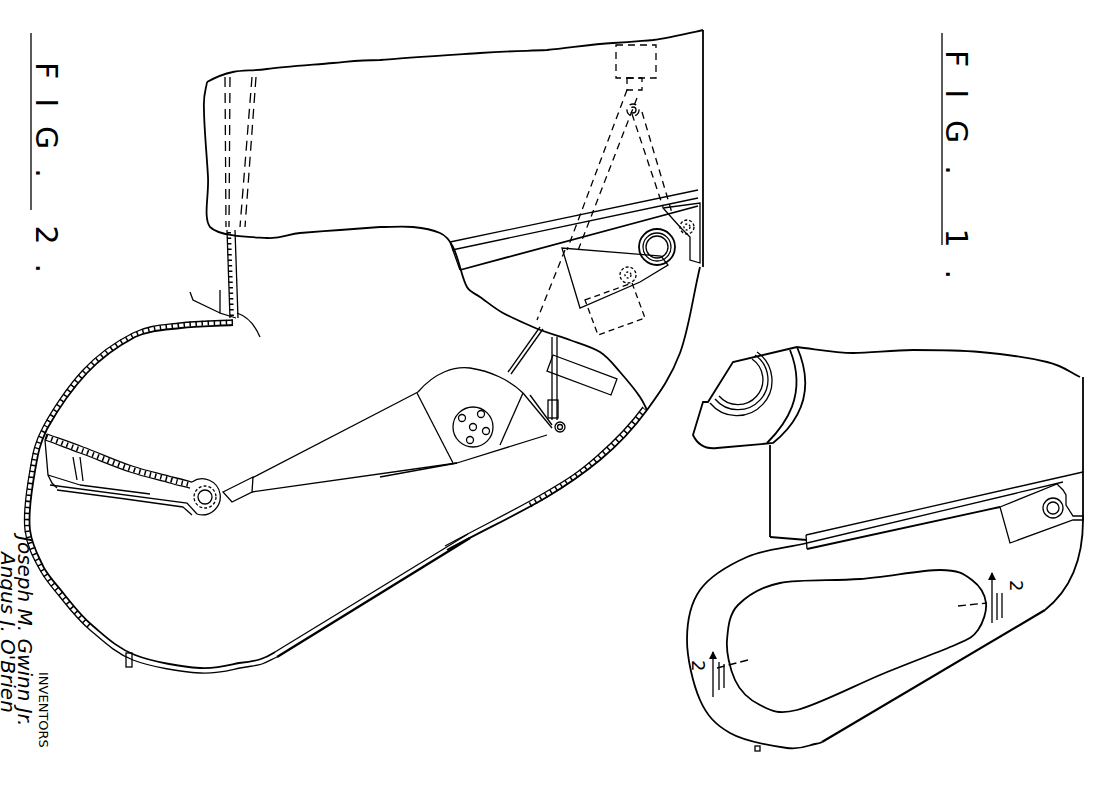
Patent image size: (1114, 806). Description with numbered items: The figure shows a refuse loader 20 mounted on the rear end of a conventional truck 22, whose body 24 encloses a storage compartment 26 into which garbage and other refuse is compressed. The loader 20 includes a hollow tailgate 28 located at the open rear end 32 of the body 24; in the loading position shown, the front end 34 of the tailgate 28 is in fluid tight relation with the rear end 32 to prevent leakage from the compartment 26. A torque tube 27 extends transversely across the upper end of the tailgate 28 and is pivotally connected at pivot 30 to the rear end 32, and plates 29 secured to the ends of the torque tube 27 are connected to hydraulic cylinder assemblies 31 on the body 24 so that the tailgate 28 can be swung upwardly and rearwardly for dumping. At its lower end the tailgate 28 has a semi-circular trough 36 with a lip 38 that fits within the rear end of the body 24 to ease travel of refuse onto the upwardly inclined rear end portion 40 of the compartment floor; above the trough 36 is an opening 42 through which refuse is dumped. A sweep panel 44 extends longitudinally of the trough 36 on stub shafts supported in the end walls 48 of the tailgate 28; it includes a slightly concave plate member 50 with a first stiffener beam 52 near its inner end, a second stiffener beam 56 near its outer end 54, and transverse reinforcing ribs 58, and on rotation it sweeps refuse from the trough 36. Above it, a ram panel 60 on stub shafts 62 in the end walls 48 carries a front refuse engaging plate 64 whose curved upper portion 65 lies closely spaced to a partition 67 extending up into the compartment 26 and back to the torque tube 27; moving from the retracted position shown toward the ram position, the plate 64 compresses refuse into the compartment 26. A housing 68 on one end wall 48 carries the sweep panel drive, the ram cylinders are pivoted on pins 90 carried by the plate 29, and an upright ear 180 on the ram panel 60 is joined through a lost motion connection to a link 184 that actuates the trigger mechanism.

In FIG. 1, the refuse loader 20 is at (691, 633).
In FIG. 1, the truck 22 is at (762, 512).
In FIG. 1, the body 24 is at (1036, 370).
In FIG. 2, the storage compartment 26 is at (303, 232).
In FIG. 2, the torque tube 27 is at (670, 265).
In FIG. 2, the tailgate structure 28 is at (135, 332).
In FIG. 1, the tailgate structure 28 is at (1049, 588).
In FIG. 2, the plates 29 is at (660, 264).
In FIG. 2, the pivot 30 is at (695, 228).
In FIG. 2, the hydraulic cylinder assemblies 31 is at (618, 70).
In FIG. 2, the rear end of body 32 is at (558, 226).
In FIG. 1, the rear end of body 32 is at (957, 503).
In FIG. 2, the front end of tailgate 34 is at (523, 243).
In FIG. 1, the front end of tailgate 34 is at (908, 520).
In FIG. 2, the trough portion 36 is at (88, 632).
In FIG. 2, the lip 38 is at (237, 322).
In FIG. 2, the rear end portion of floor 40 is at (247, 130).
In FIG. 2, the opening 42 is at (345, 613).
In FIG. 2, the sweep panel 44 is at (126, 520).
In FIG. 1, the end walls 48 is at (880, 695).
In FIG. 2, the plate member 50 is at (143, 475).
In FIG. 2, the first stiffener beam 52 is at (205, 515).
In FIG. 2, the outer end of plate 54 is at (47, 437).
In FIG. 2, the second stiffener beam 56 is at (63, 473).
In FIG. 2, the reinforcing ribs 58 is at (166, 508).
In FIG. 2, the ram panel 60 is at (393, 477).
In FIG. 2, the stub shafts 62 is at (480, 442).
In FIG. 2, the front refuse engaging plate 64 is at (353, 424).
In FIG. 2, the curved upper portion 65 is at (468, 368).
In FIG. 2, the partition 67 is at (508, 356).
In FIG. 1, the housing 68 is at (957, 632).
In FIG. 2, the pins 90 is at (630, 300).
In FIG. 2, the upright ear 180 is at (553, 402).
In FIG. 2, the link 184 is at (582, 396).